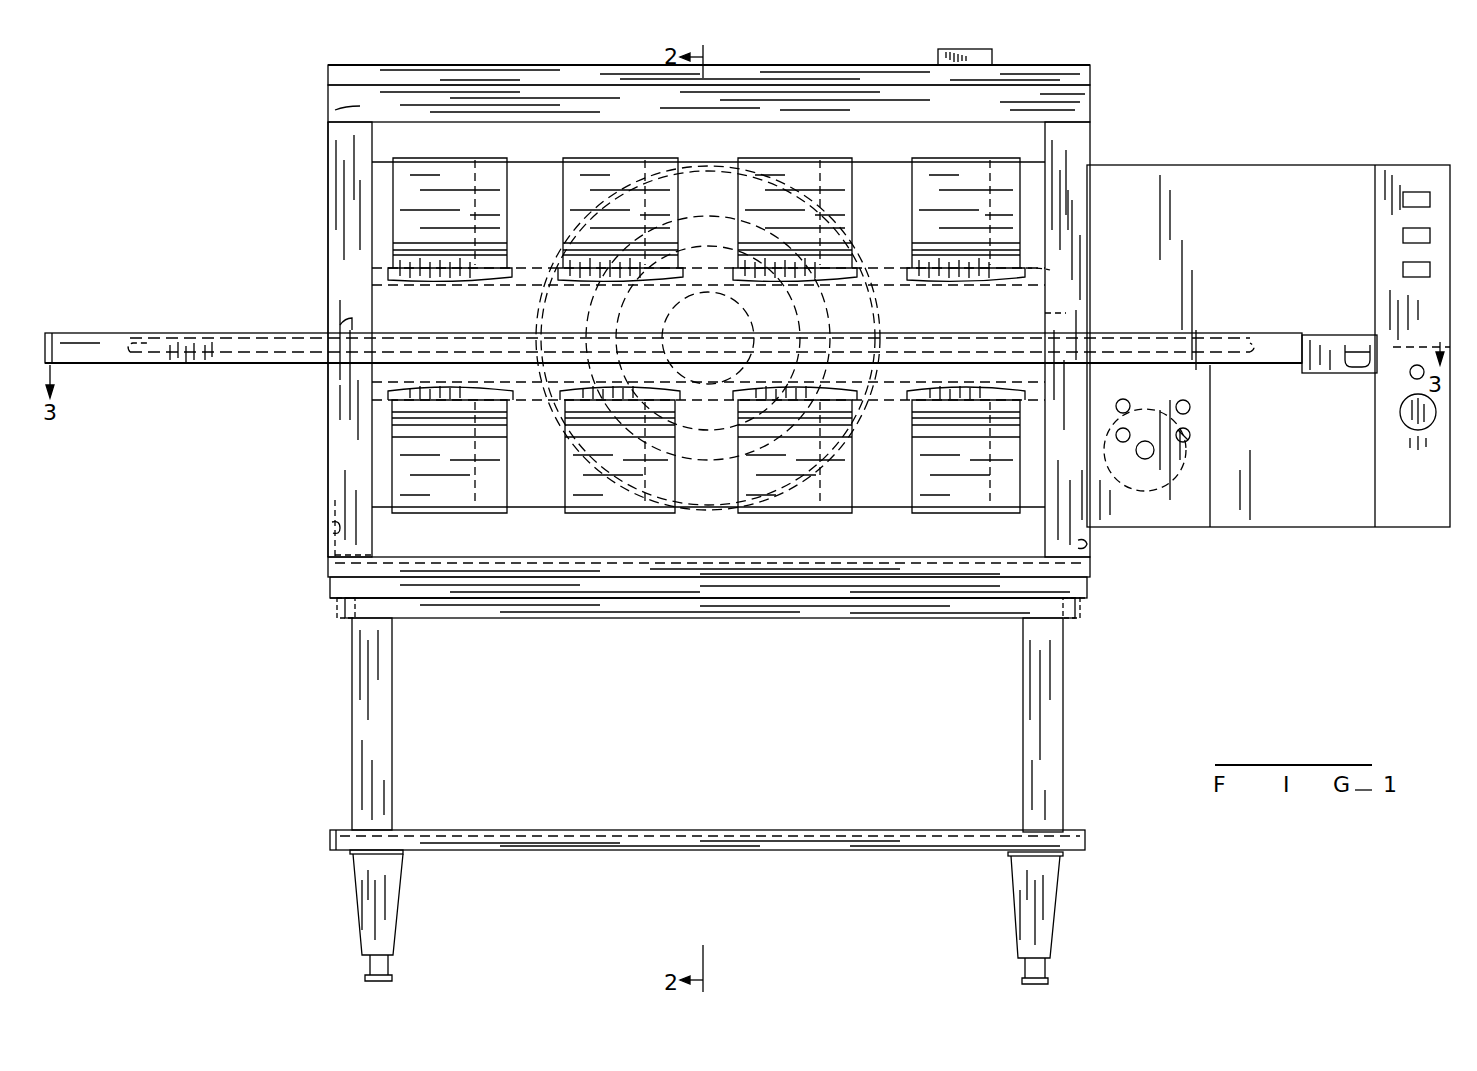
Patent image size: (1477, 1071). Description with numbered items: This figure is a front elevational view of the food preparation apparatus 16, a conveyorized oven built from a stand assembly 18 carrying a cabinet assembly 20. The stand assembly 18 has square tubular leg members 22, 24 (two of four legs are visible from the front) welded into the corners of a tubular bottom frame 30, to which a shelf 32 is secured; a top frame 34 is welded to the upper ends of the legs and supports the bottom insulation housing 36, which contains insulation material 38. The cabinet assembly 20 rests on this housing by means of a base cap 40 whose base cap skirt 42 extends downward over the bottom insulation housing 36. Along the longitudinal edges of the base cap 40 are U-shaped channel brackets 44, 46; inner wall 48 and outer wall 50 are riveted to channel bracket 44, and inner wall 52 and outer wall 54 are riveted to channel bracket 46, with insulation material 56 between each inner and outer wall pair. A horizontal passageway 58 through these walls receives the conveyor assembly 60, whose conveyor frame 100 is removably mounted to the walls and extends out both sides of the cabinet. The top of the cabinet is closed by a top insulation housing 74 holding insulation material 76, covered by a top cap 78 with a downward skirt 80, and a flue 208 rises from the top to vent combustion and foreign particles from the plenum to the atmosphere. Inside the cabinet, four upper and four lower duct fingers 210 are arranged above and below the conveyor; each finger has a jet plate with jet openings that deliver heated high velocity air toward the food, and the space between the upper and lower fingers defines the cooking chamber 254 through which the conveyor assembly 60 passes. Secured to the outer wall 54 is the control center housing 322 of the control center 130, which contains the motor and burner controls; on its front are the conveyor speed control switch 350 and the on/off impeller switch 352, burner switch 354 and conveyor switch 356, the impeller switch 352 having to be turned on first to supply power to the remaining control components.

The food preparation apparatus 16 is at (1205, 648).
The stand assembly 18 is at (278, 836).
The cabinet assembly 20 is at (250, 442).
The leg member 22 is at (1063, 689).
The leg member 24 is at (352, 676).
The bottom frame 30 is at (330, 852).
The shelf 32 is at (575, 830).
The top frame 34 is at (340, 620).
The bottom insulation housing 36 is at (1085, 600).
The insulation material 38 is at (1088, 585).
The base cap 40 is at (328, 562).
The base cap skirt 42 is at (330, 575).
The channel bracket 44 is at (335, 532).
The channel bracket 46 is at (1088, 546).
The inner wall 48 is at (372, 462).
The outer wall 50 is at (328, 432).
The inner wall 52 is at (1050, 270).
The outer wall 54 is at (1088, 232).
The insulation material 56 is at (335, 398).
The passageway 58 is at (340, 320).
The conveyor assembly 60 is at (178, 364).
The top insulation housing 74 is at (327, 100).
The insulation material 76 is at (330, 116).
The top cap 78 is at (348, 72).
The skirt 80 is at (326, 72).
The conveyor frame 100 is at (112, 333).
The control center 130 is at (1390, 152).
The flue 208 is at (993, 58).
The duct fingers 210 is at (398, 180).
The cooking chamber 254 is at (442, 318).
The control center housing 322 is at (1250, 165).
The conveyor speed control switch 350 is at (1400, 412).
The impeller switch 352 is at (1403, 200).
The burner switch 354 is at (1403, 235).
The conveyor switch 356 is at (1403, 270).